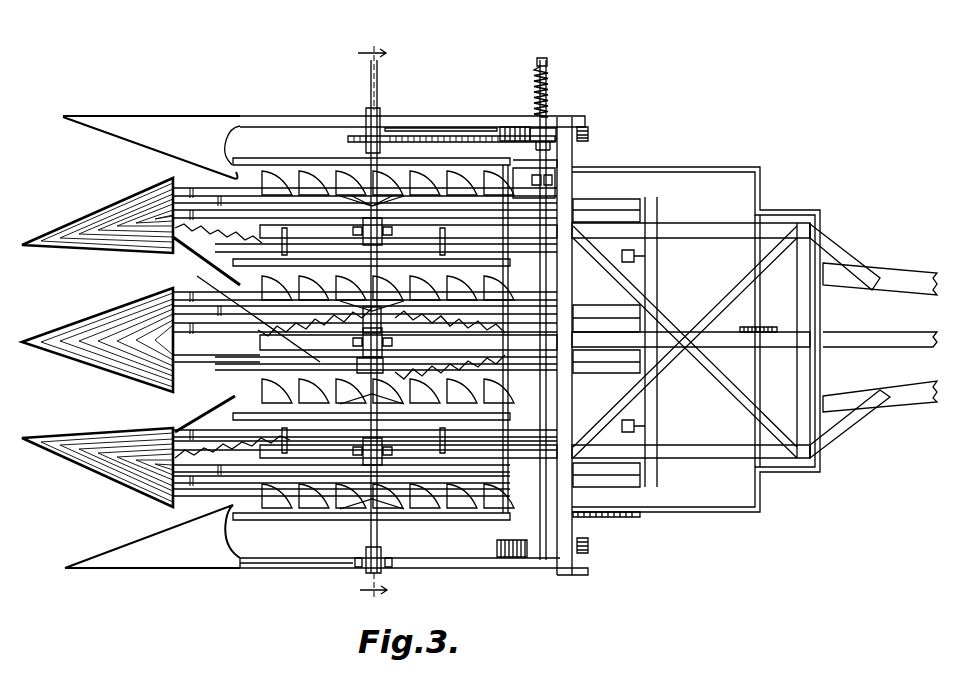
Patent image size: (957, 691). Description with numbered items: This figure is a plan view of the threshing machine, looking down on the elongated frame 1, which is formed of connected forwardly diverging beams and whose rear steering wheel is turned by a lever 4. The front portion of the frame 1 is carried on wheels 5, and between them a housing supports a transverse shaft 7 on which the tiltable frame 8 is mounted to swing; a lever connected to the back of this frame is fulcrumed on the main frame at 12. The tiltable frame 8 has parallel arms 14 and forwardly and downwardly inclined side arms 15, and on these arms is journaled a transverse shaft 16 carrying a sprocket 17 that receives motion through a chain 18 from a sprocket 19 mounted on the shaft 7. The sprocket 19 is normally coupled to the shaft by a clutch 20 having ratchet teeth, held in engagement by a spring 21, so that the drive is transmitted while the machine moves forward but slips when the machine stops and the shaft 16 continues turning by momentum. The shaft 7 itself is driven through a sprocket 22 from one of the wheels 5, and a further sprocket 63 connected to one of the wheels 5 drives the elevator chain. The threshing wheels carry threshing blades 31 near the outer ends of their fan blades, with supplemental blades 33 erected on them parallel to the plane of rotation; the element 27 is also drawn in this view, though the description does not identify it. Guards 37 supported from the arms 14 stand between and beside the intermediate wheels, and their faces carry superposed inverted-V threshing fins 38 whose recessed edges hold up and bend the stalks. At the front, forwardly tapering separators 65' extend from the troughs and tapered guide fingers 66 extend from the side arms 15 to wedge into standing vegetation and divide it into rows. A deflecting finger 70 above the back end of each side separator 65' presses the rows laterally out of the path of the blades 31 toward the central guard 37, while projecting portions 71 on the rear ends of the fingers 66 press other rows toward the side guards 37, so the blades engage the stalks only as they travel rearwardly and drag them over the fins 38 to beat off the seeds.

The elongated frame 1 is at (911, 396).
The lever 4 is at (368, 110).
The wheels 5 is at (590, 134).
The transverse shaft 7 is at (546, 400).
The tiltable frame 8 is at (566, 392).
The fulcrum 12 is at (769, 326).
The parallel arms 14 is at (313, 455).
The side arms 15 is at (327, 562).
The transverse shaft 16 is at (381, 535).
The sprocket 17 is at (392, 134).
The chain 18 is at (431, 134).
The sprocket 19 is at (556, 138).
The clutch 20 is at (517, 128).
The spring 21 is at (550, 81).
The sprocket 22 is at (560, 162).
The cross shelf 27 is at (504, 267).
The threshing blades 31 is at (300, 176).
The supplemental blades 33 is at (330, 180).
The guards 37 is at (497, 436).
The threshing fins 38 is at (205, 283).
The sprocket 63 is at (222, 360).
The separators 65' is at (97, 342).
The guide fingers 66 is at (145, 560).
The deflecting finger 70 is at (187, 257).
The projecting portions 71 is at (230, 176).